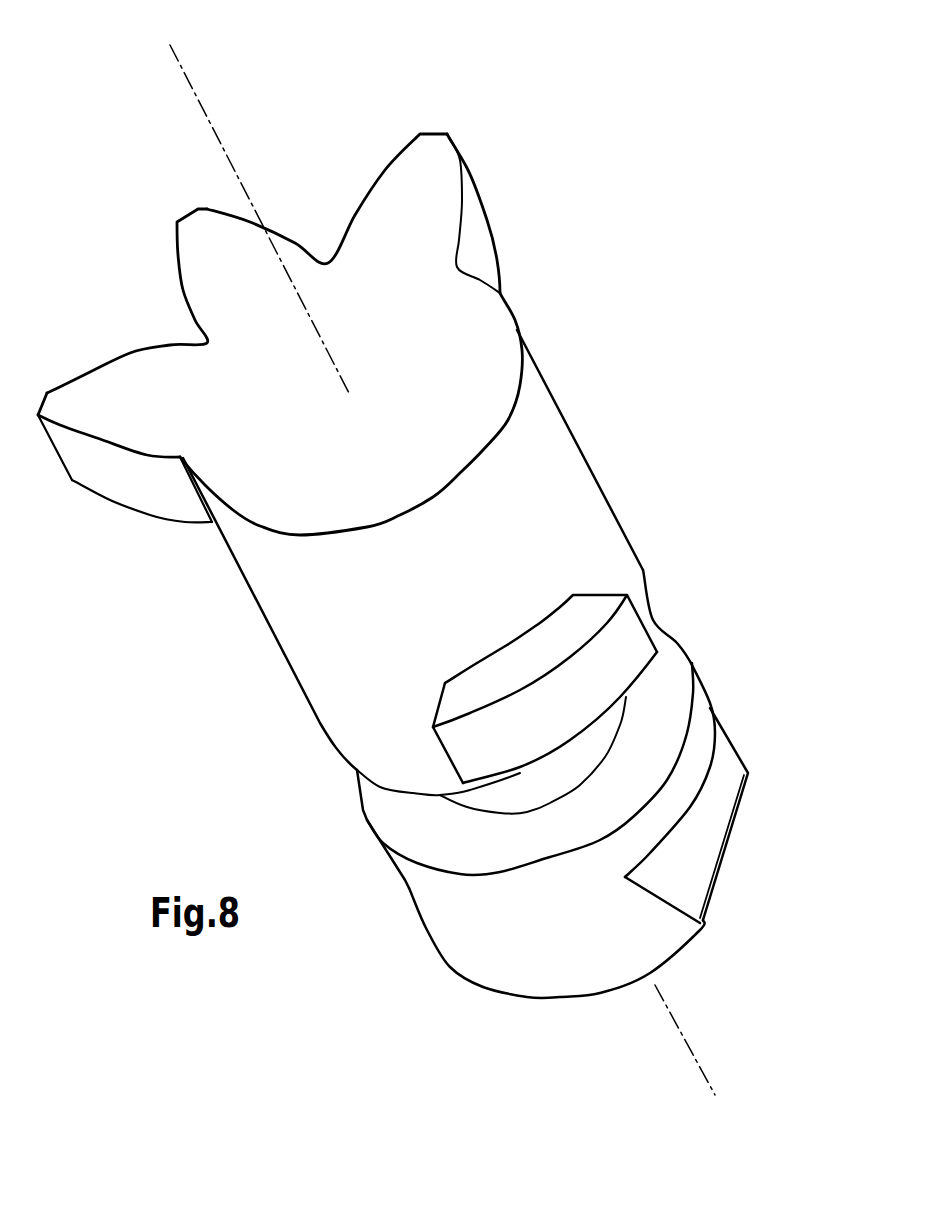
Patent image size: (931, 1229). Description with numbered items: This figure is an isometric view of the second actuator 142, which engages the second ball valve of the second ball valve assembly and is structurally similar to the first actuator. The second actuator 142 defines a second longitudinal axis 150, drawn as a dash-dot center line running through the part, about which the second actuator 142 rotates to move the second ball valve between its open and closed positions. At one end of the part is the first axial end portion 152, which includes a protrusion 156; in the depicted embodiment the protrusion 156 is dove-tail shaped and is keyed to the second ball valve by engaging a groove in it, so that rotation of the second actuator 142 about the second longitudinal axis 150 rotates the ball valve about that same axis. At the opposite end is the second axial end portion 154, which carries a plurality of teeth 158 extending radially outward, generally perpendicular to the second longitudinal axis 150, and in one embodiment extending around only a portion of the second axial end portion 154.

The second actuator 142 is at (642, 429).
The second longitudinal axis 150 is at (215, 72).
The first axial end portion 152 is at (440, 935).
The second axial end portion 154 is at (563, 410).
The protrusion 156 is at (587, 933).
The plurality of teeth 158 is at (112, 360).